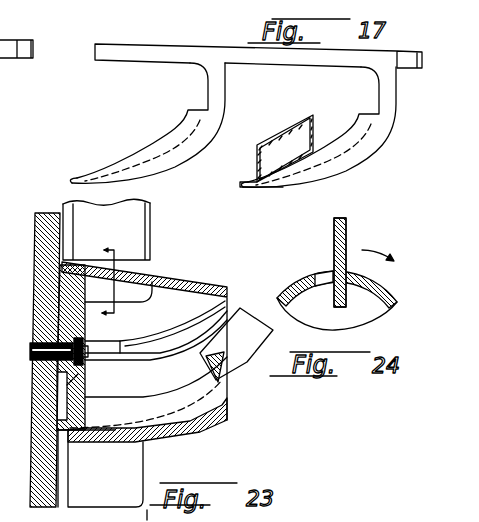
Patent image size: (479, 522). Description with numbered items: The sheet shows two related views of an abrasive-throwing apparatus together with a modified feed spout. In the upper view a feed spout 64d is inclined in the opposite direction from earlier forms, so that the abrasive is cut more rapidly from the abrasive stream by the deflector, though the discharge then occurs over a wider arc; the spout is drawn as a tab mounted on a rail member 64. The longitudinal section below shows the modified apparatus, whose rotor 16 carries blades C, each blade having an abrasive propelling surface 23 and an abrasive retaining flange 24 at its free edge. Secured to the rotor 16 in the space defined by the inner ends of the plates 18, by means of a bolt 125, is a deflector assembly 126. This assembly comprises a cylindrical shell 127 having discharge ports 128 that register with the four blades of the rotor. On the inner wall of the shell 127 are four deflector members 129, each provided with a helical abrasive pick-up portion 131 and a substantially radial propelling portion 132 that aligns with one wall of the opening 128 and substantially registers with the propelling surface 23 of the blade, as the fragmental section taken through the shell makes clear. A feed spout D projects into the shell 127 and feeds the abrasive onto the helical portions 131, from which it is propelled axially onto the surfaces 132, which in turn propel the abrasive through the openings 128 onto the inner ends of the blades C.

In FIG. 23, the rotor 16 is at (40, 266).
In FIG. 23, the plates 18 is at (50, 438).
In FIG. 23, the abrasive propelling surface 23 is at (103, 229).
In FIG. 24, the abrasive propelling surface 23 is at (334, 243).
In FIG. 23, the abrasive retaining flange 24 is at (112, 285).
In FIG. 23, the rail member 64 is at (102, 476).
In FIG. 17, the feed spout 64d is at (289, 143).
In FIG. 23, the bolt 125 is at (29, 357).
In FIG. 23, the deflector assembly 126 is at (190, 272).
In FIG. 23, the cylindrical shell 127 is at (184, 430).
In FIG. 24, the cylindrical shell 127 is at (382, 288).
In FIG. 23, the discharge ports 128 is at (106, 264).
In FIG. 24, the discharge ports 128 is at (325, 276).
In FIG. 23, the deflector members 129 is at (155, 292).
In FIG. 23, the helical abrasive pick-up portion 131 is at (148, 363).
In FIG. 23, the radial propelling portion 132 is at (98, 362).
In FIG. 24, the radial propelling portion 132 is at (333, 303).
In FIG. 23, the blades C is at (153, 242).
In FIG. 24, the blades C is at (346, 241).
In FIG. 23, the feed spout D is at (253, 310).